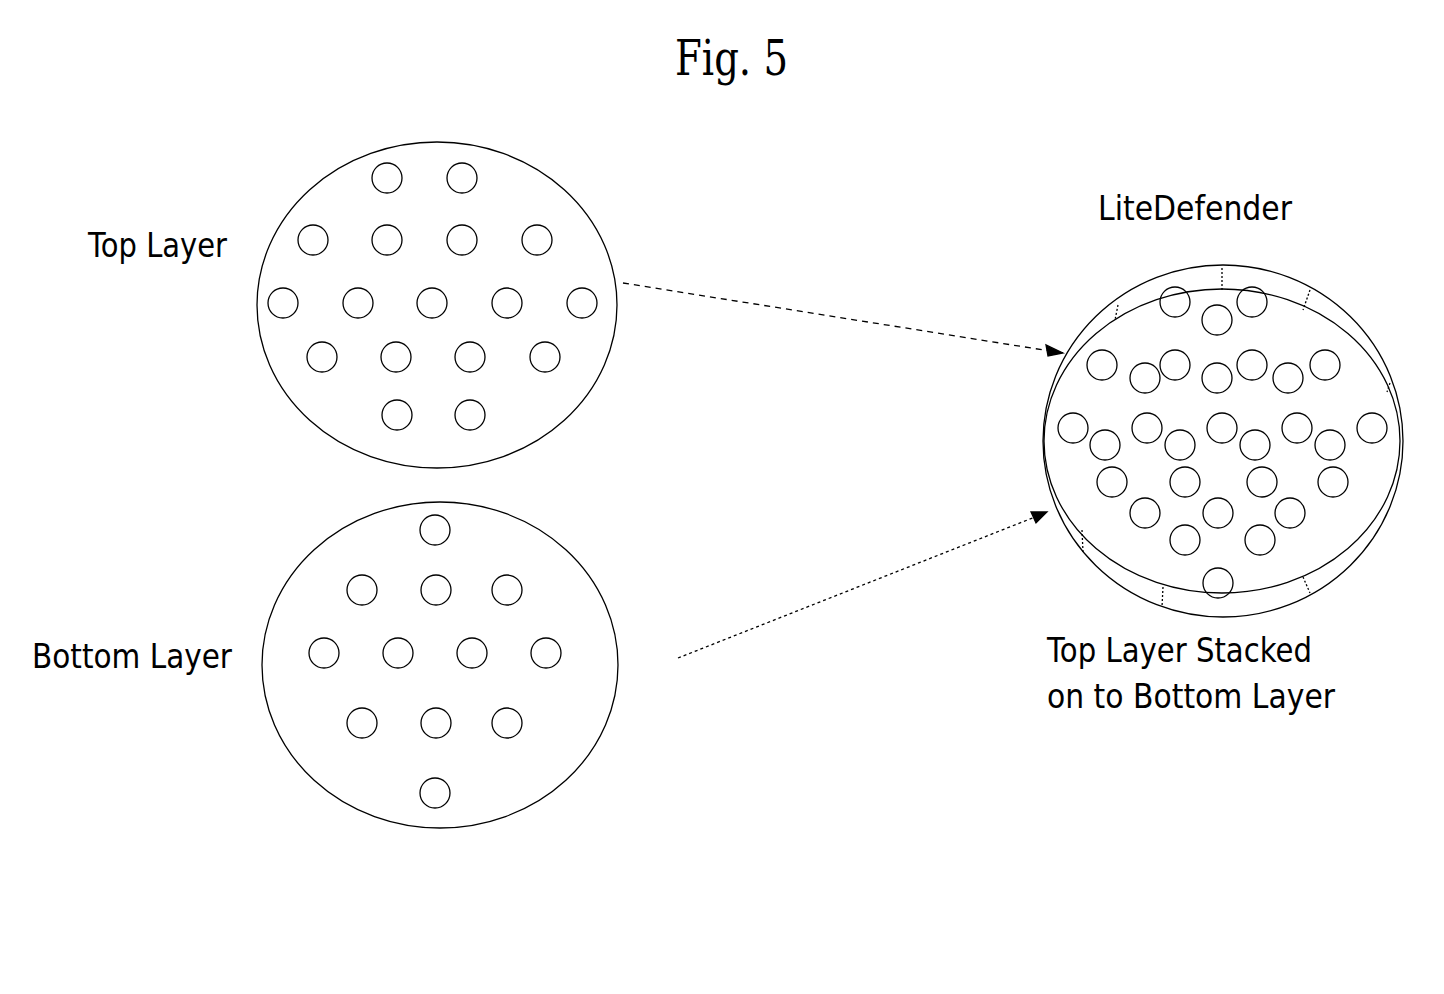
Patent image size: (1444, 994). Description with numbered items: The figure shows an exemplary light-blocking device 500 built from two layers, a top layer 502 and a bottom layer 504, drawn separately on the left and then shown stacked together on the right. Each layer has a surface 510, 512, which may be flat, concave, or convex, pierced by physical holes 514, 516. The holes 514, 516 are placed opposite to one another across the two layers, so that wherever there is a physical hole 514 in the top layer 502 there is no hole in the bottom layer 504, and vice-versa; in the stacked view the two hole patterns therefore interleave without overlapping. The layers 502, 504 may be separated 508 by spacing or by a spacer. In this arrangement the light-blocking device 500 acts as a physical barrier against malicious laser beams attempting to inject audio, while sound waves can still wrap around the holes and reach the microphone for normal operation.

The light-blocking device 500 is at (1198, 423).
The top layer 502 is at (510, 305).
The bottom layer 504 is at (490, 660).
The separation 508 is at (1175, 441).
The surface 510 is at (471, 318).
The surface 512 is at (508, 654).
The physical hole 514 is at (538, 150).
The physical hole 516 is at (517, 810).